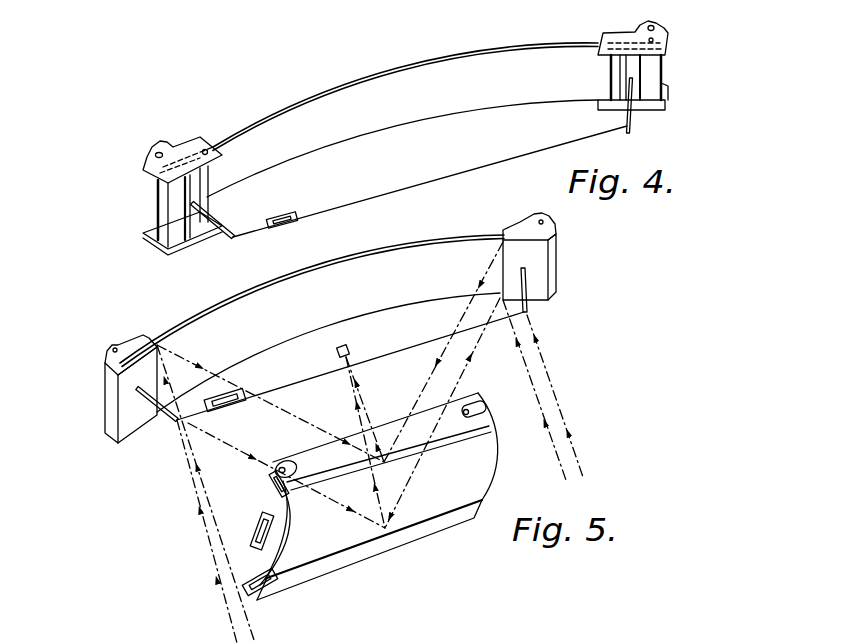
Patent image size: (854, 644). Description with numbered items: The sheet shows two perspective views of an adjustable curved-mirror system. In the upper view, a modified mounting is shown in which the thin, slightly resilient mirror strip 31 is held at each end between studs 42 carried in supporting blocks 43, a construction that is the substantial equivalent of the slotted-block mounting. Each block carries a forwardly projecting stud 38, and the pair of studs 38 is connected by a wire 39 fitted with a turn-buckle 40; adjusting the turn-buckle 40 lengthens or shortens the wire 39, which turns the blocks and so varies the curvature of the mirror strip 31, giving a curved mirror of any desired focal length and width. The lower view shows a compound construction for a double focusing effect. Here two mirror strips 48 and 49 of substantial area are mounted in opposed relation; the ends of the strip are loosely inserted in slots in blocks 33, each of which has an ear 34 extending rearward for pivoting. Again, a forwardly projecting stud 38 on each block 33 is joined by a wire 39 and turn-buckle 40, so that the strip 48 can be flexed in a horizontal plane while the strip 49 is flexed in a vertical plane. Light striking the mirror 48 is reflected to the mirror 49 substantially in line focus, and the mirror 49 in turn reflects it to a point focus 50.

In FIG. 4, the mirror strip 31 is at (366, 90).
In FIG. 5, the block 33 is at (110, 398).
In FIG. 5, the ear 34 is at (122, 344).
In FIG. 4, the stud 38 is at (224, 235).
In FIG. 5, the stud 38 is at (148, 403).
In FIG. 4, the wire 39 is at (455, 171).
In FIG. 5, the wire 39 is at (427, 338).
In FIG. 4, the turn-buckle 40 is at (284, 225).
In FIG. 5, the turn-buckle 40 is at (222, 411).
In FIG. 4, the stud 42 is at (164, 165).
In FIG. 4, the supporting block 43 is at (177, 233).
In FIG. 5, the mirror strip 48 is at (330, 300).
In FIG. 5, the mirror strip 49 is at (468, 465).
In FIG. 5, the point focus 50 is at (350, 345).